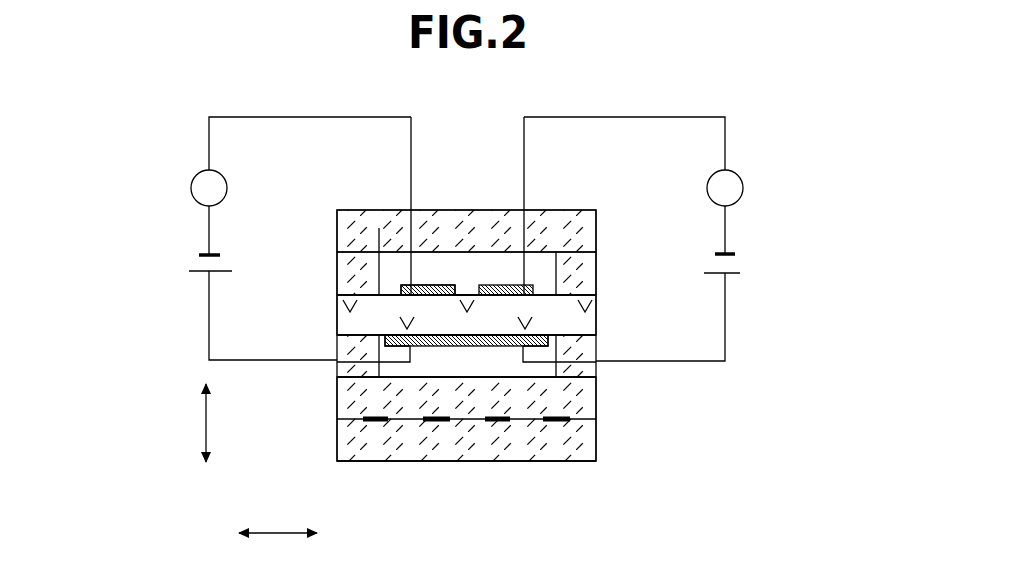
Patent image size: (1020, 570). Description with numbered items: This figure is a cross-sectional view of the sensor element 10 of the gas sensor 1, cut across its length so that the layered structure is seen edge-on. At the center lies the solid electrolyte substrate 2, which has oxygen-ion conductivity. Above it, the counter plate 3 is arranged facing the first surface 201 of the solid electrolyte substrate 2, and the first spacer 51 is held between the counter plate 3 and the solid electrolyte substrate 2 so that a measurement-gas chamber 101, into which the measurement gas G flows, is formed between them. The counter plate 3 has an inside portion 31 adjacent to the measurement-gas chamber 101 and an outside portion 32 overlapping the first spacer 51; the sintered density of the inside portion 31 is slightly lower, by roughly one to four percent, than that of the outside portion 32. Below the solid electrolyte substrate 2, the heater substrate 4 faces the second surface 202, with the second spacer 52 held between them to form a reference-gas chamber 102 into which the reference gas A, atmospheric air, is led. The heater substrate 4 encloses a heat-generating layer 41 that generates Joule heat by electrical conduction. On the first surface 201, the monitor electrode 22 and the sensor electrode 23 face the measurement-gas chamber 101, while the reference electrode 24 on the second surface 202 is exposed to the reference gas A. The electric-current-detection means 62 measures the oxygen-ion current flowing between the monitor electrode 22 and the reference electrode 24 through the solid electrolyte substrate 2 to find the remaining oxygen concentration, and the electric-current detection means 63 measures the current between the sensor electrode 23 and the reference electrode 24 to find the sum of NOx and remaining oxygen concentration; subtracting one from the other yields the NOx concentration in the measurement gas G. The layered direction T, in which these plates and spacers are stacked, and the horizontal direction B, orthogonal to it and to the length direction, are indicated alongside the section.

The gas sensor 1 is at (496, 310).
The solid electrolyte substrate 2 is at (452, 242).
The counter plate 3 is at (439, 211).
The heater substrate 4 is at (525, 452).
The sensor element 10 is at (413, 467).
The monitor electrode 22 is at (512, 285).
The sensor electrode 23 is at (435, 285).
The reference electrode 24 is at (447, 346).
The inside portion 31 is at (401, 230).
The outside portion 32 is at (353, 237).
The heat-generating layer 41 is at (557, 421).
The first spacer 51 is at (583, 283).
The second spacer 52 is at (510, 426).
The electric-current-detection means 62 is at (754, 163).
The electric-current detection means 63 is at (181, 170).
The measurement-gas chamber 101 is at (543, 277).
The reference-gas chamber 102 is at (517, 370).
The first surface 201 is at (387, 294).
The second surface 202 is at (380, 346).
The reference gas A is at (418, 377).
The measurement gas G is at (471, 272).
The layered direction T is at (192, 423).
The horizontal direction B is at (278, 516).